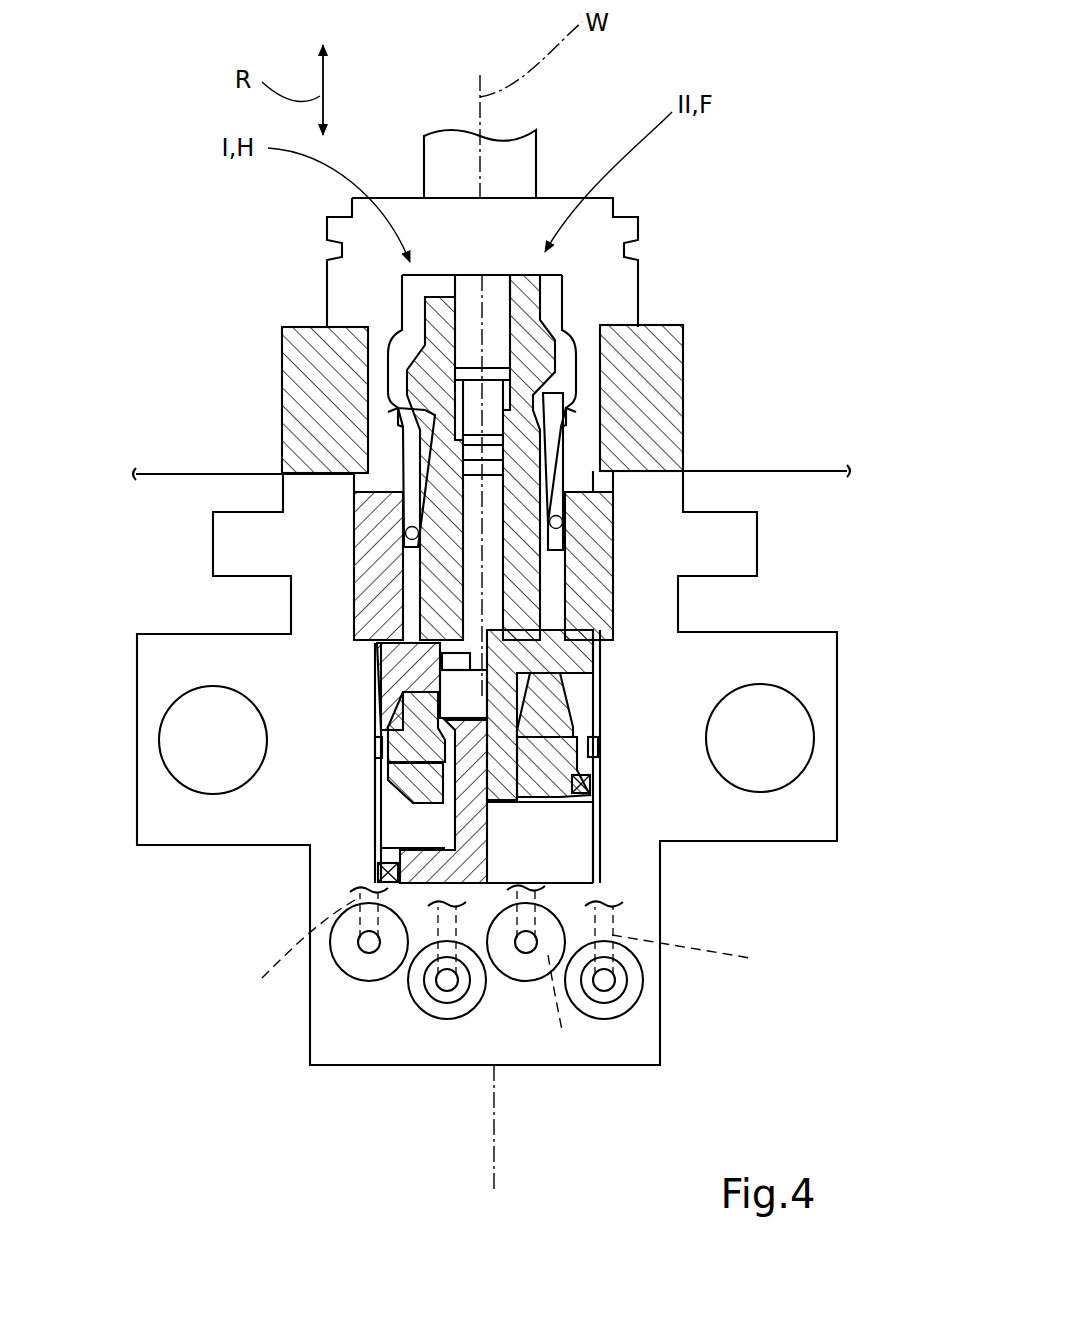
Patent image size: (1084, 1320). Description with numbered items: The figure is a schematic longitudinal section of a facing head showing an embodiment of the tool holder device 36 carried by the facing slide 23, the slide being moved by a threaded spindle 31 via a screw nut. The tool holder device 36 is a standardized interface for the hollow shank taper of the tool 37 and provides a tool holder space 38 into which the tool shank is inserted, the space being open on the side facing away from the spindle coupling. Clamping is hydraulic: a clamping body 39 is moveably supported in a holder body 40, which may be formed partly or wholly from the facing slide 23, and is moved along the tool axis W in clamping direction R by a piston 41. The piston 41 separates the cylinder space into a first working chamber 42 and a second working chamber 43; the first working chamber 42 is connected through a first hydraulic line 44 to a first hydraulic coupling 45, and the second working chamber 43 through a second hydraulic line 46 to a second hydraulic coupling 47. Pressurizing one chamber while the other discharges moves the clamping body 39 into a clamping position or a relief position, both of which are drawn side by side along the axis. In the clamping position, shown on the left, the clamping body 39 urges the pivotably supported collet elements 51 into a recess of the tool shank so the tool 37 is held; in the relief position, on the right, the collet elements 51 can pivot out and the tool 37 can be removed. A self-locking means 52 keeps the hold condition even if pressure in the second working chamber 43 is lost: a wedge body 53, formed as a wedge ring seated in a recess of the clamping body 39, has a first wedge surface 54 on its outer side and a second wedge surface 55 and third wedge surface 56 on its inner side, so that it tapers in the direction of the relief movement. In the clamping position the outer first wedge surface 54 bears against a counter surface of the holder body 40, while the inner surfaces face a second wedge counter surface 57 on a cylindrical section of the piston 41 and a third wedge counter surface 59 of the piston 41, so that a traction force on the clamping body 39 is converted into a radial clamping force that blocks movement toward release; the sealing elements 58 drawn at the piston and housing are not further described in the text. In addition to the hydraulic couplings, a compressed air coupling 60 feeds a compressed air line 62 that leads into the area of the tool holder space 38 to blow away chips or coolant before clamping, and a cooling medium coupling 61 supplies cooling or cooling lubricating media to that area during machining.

The facing slide 23 is at (808, 650).
The threaded spindle 31 is at (190, 757).
The tool holder device 36 is at (655, 222).
The tool 37 is at (515, 160).
The tool holder space 38 is at (585, 332).
The clamping body 39 is at (535, 548).
The holder body 40 is at (590, 560).
The piston 41 is at (385, 868).
The first working chamber 42 is at (578, 870).
The second working chamber 43 is at (372, 810).
The first hydraulic line 44 is at (564, 1007).
The first hydraulic coupling 45 is at (526, 942).
The second hydraulic line 46 is at (291, 952).
The second hydraulic coupling 47 is at (369, 942).
The collet elements 51 is at (400, 412).
The self-locking means 52 is at (240, 668).
The wedge body 53 is at (572, 718).
The first wedge surface 54 is at (575, 697).
The second wedge surface 55 is at (520, 680).
The third wedge surface 56 is at (525, 700).
The second wedge counter surface 57 is at (593, 767).
The seal 58 is at (568, 727).
The third wedge counter surface 59 is at (442, 753).
The compressed air coupling 60 is at (604, 980).
The cooling medium coupling 61 is at (447, 980).
The compressed air line 62 is at (700, 954).